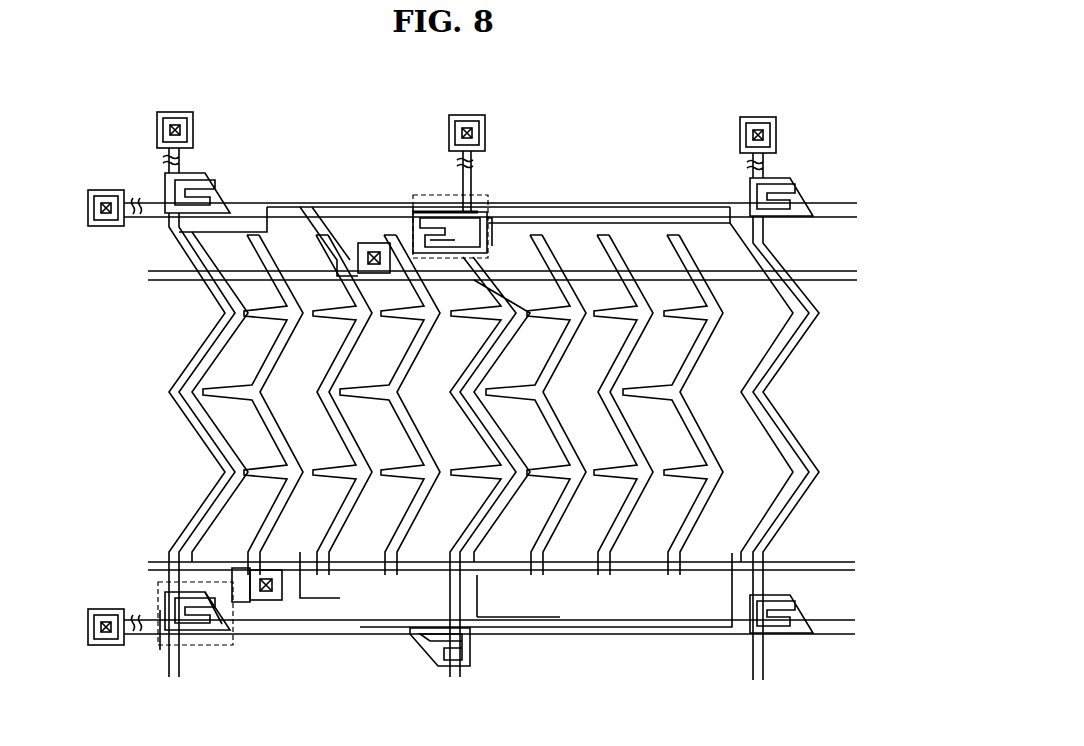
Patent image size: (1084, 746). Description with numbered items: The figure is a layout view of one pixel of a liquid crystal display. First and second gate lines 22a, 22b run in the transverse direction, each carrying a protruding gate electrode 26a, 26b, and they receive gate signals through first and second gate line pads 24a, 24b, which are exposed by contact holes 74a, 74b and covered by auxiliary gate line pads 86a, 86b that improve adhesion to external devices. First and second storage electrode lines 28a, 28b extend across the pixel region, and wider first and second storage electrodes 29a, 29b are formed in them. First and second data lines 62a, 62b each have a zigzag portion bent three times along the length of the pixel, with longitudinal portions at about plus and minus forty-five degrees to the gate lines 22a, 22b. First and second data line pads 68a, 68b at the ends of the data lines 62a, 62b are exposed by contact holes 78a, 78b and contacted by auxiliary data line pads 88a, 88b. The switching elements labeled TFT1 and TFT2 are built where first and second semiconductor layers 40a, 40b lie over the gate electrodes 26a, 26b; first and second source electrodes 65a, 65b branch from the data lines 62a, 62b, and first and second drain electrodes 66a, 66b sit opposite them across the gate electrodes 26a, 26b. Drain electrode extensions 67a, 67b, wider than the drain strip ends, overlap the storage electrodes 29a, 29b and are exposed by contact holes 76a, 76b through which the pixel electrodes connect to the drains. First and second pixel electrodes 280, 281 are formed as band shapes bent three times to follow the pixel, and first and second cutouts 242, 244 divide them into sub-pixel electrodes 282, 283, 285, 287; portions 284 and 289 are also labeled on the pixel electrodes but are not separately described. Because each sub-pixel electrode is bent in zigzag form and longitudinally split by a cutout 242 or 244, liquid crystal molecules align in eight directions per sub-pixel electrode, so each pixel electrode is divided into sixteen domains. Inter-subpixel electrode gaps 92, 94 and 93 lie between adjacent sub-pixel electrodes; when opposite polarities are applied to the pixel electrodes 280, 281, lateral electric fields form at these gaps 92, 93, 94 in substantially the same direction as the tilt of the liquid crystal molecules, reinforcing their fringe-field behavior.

The first auxiliary data line pad 88a is at (157, 122).
The first data line pad 68a is at (163, 140).
The contact hole 78a is at (190, 135).
The second auxiliary data line pad 88b is at (452, 115).
The second data line pad 68b is at (470, 125).
The contact hole 78b is at (486, 140).
The second auxiliary gate line pad 86b is at (88, 200).
The second gate line pad 24b is at (88, 210).
The contact hole 74b is at (103, 220).
The first auxiliary gate line pad 86a is at (92, 609).
The first gate line pad 24a is at (88, 616).
The contact hole 74a is at (101, 628).
The second gate line 22b is at (690, 202).
The first gate line 22a is at (370, 622).
The second storage electrode line 28b is at (186, 288).
The first storage electrode line 28a is at (330, 572).
The thin film transistor TFT2 is at (428, 195).
The thin film transistor TFT1 is at (158, 604).
The second semiconductor layer 40b is at (418, 205).
The first semiconductor layer 40a is at (165, 650).
The second source electrode 65b is at (440, 212).
The first source electrode 65a is at (180, 632).
The second drain electrode 66b is at (446, 246).
The first drain electrode 66a is at (223, 630).
The second gate electrode 26b is at (487, 236).
The first gate electrode 26a is at (165, 582).
The storage electrode portion 284 is at (478, 208).
The sub-pixel electrode 282 is at (530, 300).
The sub-pixel electrode 283 is at (600, 270).
The first pixel electrode 280 is at (625, 148).
The first cutout 242 is at (262, 234).
The second cutout 244 is at (396, 627).
The second storage electrode 29b is at (338, 262).
The first storage electrode 29a is at (302, 600).
The contact hole 76b is at (370, 243).
The second drain electrode extension 67b is at (345, 248).
The contact hole 76a is at (272, 600).
The first drain electrode extension 67a is at (262, 602).
The first data line 62a is at (197, 500).
The second data line 62b is at (510, 452).
The inter-subpixel electrode gap 92 is at (362, 440).
The inter-subpixel electrode gap 93 is at (498, 415).
The inter-subpixel electrode gap 94 is at (638, 436).
The sub-pixel electrode 285 is at (470, 630).
The storage electrode portion 289 is at (545, 622).
The sub-pixel electrode 287 is at (585, 600).
The second pixel electrode 281 is at (585, 690).